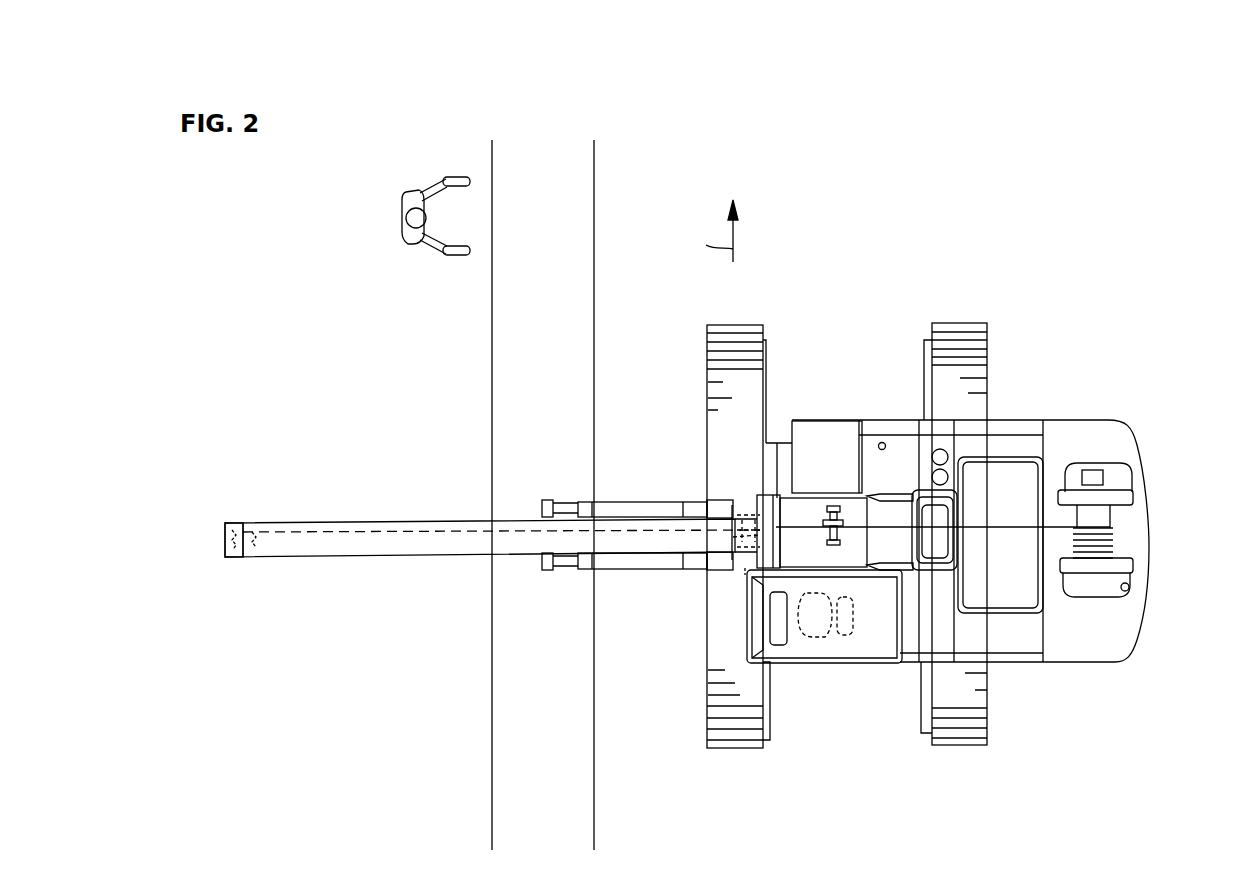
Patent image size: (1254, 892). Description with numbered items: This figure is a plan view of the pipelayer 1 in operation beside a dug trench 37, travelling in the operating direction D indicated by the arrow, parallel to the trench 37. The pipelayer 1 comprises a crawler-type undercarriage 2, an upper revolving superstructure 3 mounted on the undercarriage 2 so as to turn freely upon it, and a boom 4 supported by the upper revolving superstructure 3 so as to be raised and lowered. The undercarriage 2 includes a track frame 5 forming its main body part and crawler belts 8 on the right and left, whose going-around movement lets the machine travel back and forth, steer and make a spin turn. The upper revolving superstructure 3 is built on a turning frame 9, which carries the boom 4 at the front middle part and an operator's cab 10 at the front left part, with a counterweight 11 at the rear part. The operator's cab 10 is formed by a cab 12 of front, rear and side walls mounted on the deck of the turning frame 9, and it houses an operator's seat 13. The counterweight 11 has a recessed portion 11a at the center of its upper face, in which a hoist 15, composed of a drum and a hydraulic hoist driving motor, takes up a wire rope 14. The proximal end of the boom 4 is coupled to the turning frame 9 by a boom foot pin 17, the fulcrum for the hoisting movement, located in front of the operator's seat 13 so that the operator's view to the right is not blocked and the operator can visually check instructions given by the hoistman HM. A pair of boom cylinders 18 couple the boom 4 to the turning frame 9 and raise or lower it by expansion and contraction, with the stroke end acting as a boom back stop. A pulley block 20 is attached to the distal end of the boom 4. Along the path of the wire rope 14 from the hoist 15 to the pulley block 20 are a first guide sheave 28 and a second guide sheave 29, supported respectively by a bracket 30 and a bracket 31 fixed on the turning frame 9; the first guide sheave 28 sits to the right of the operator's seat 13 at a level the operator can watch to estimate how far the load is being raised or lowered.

The pipelayer 1 is at (1090, 279).
The crawler-type undercarriage 2 is at (985, 700).
The upper revolving superstructure 3 is at (1156, 430).
The boom 4 is at (409, 521).
The track frame 5 is at (923, 357).
The crawler belts 8 is at (733, 748).
The turning frame 9 is at (741, 497).
The operator's cab 10 is at (873, 632).
The counterweight 11 is at (1135, 623).
The recessed portion 11a is at (1130, 584).
The cab 12 is at (835, 662).
The operator's seat 13 is at (812, 637).
The wire rope 14 is at (325, 532).
The hoist 15 is at (1142, 495).
The boom foot pin 17 is at (771, 492).
The boom cylinders 18 is at (638, 501).
The pulley block 20 is at (236, 560).
The first guide sheave 28 is at (846, 495).
The second guide sheave 29 is at (733, 538).
The bracket 30 is at (829, 503).
The bracket 31 is at (744, 572).
The trench 37 is at (559, 756).
The hoistman HM is at (400, 221).
The operating direction D is at (715, 231).